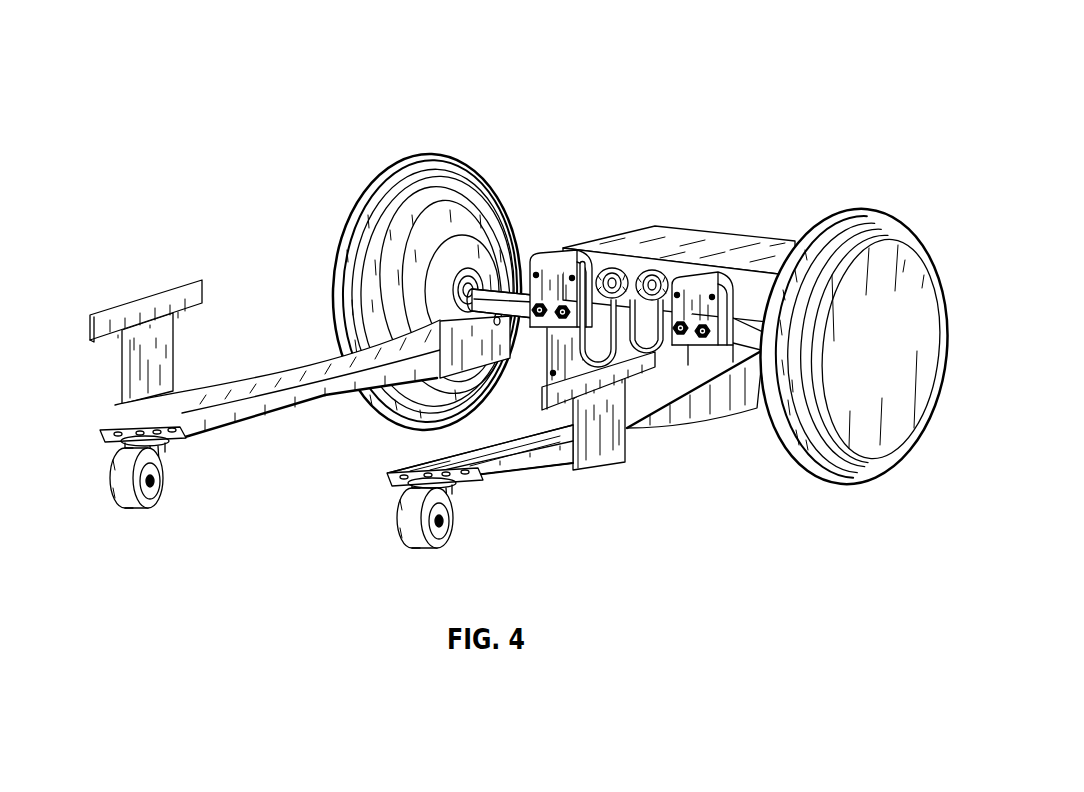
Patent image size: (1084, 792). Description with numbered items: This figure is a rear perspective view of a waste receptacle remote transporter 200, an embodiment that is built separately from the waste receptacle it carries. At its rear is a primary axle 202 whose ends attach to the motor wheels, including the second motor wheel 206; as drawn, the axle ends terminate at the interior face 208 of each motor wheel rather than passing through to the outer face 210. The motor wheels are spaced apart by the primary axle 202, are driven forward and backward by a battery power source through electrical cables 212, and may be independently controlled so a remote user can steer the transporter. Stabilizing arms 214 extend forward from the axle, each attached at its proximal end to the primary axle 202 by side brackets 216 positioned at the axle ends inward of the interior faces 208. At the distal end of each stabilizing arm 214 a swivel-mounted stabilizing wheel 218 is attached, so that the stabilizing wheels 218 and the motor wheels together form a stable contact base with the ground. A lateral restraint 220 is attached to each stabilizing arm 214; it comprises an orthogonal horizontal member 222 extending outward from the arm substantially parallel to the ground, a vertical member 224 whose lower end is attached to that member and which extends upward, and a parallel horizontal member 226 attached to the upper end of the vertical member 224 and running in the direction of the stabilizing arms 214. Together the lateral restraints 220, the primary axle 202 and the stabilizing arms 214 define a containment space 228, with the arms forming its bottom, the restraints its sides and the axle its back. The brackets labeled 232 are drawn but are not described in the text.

The waste receptacle remote transporter 200 is at (753, 66).
The primary axle 202 is at (519, 330).
The second motor wheel 206 is at (436, 176).
The interior face 208 is at (460, 222).
The outer face 210 is at (862, 444).
The electrical cables 212 is at (590, 295).
The stabilizing arms 214 is at (233, 421).
The side brackets 216 is at (447, 280).
The stabilizing wheel 218 is at (137, 505).
The lateral restraint 220 is at (374, 370).
The orthogonal horizontal member 222 is at (190, 388).
The vertical member 224 is at (120, 366).
The parallel horizontal member 226 is at (196, 295).
The containment space 228 is at (298, 345).
The mounting bracket 232 is at (566, 263).